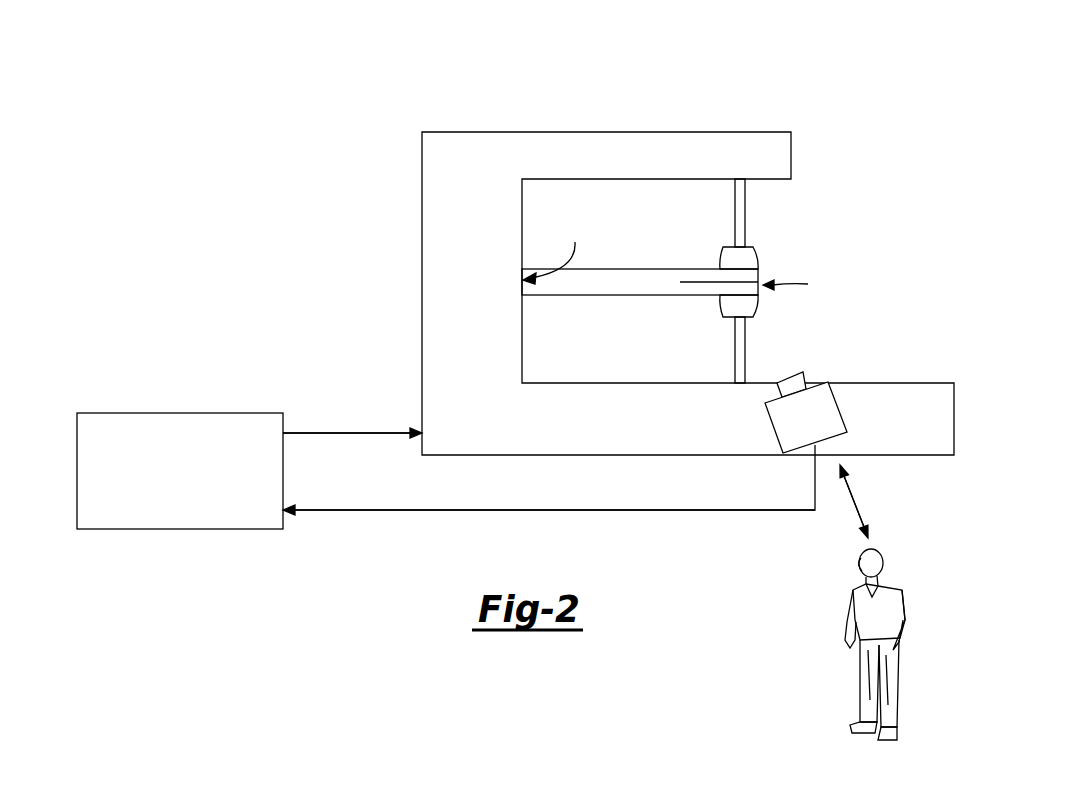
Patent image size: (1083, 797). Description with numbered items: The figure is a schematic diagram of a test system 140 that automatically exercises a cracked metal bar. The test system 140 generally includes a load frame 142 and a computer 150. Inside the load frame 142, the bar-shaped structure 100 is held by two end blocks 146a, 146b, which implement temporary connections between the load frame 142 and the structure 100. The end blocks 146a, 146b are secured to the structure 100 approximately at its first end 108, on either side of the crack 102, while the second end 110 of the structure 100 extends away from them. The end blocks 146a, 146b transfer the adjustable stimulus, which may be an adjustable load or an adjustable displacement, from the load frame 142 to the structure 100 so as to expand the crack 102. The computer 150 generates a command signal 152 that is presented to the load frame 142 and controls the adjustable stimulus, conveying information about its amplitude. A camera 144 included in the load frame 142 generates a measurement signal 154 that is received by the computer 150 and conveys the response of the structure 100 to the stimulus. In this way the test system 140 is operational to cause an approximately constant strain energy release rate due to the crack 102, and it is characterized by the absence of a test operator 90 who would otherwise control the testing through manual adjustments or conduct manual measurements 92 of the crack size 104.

The test system 140 is at (535, 65).
The load frame 142 is at (622, 132).
The structure 100 is at (627, 269).
The crack 102 is at (680, 282).
The end block 146a is at (760, 258).
The end block 146b is at (760, 305).
The first end 108 is at (802, 284).
The second end 110 is at (557, 250).
The camera 144 is at (838, 405).
The computer 150 is at (180, 413).
The command signal 152 is at (363, 432).
The measurement signal 154 is at (365, 510).
The manual measurements 92 is at (855, 498).
The crack size 104 is at (854, 501).
The test operator 90 is at (902, 595).